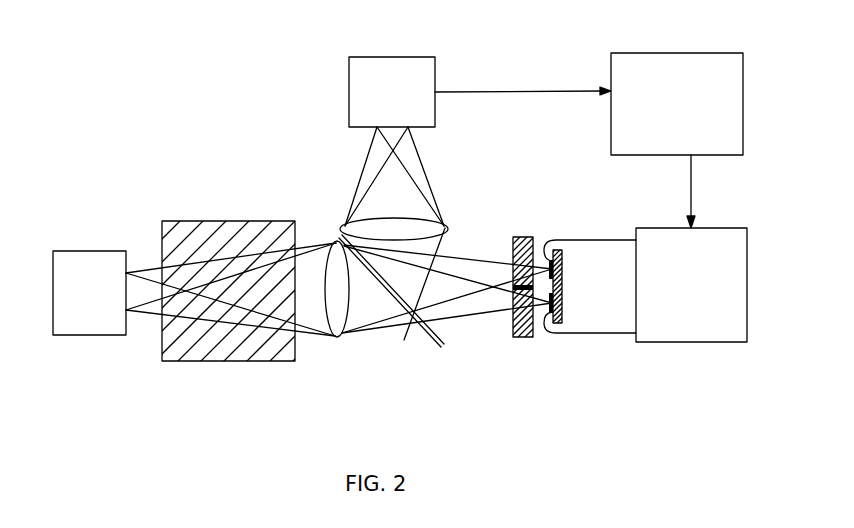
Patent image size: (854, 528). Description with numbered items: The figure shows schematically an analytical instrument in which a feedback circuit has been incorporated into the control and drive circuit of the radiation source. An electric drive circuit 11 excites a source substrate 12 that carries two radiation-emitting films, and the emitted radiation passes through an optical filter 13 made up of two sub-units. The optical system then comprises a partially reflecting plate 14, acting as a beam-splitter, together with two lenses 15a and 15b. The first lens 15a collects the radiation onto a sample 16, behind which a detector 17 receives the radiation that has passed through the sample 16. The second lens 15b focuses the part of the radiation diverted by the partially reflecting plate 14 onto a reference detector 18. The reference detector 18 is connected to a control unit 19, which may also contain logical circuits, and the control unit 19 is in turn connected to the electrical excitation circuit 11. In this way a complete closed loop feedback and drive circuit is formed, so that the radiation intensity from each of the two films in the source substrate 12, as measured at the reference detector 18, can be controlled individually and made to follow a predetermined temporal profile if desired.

The electric drive circuit 11 is at (700, 342).
The source substrate 12 is at (561, 294).
The optical filter 13 is at (507, 331).
The partially reflecting plate 14 is at (424, 339).
The first lens 15a is at (352, 320).
The second lens 15b is at (412, 219).
The sample 16 is at (217, 362).
The detector 17 is at (73, 336).
The reference detector 18 is at (349, 72).
The control unit 19 is at (655, 53).